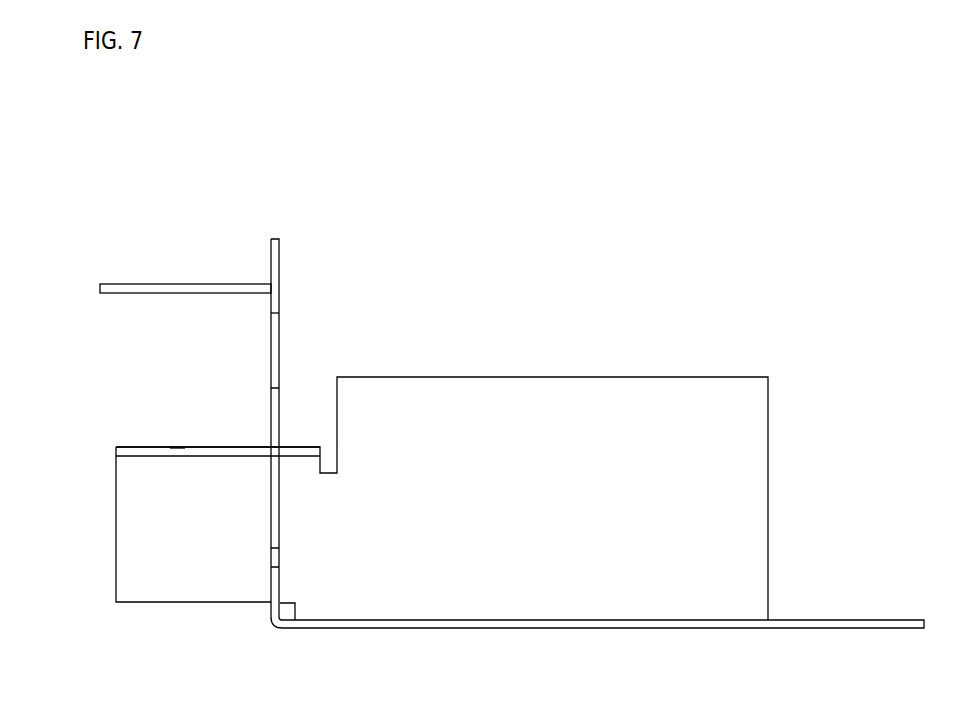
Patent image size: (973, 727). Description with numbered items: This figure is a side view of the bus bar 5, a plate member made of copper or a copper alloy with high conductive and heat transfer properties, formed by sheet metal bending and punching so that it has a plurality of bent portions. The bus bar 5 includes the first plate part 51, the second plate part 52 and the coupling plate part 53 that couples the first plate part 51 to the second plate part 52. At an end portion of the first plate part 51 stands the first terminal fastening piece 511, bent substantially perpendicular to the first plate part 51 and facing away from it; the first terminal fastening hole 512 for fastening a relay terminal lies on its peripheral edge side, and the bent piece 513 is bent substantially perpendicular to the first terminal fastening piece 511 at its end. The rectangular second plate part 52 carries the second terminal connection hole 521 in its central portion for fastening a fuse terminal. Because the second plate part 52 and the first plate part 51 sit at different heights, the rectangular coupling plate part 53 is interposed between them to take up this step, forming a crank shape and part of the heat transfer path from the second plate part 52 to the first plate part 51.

The bus bar 5 is at (775, 248).
The first plate part 51 is at (857, 620).
The first terminal fastening piece 511 is at (277, 405).
The first terminal fastening hole 512 is at (281, 318).
The bent piece 513 is at (128, 290).
The second plate part 52 is at (140, 450).
The second terminal connection hole 521 is at (177, 450).
The coupling plate part 53 is at (192, 563).